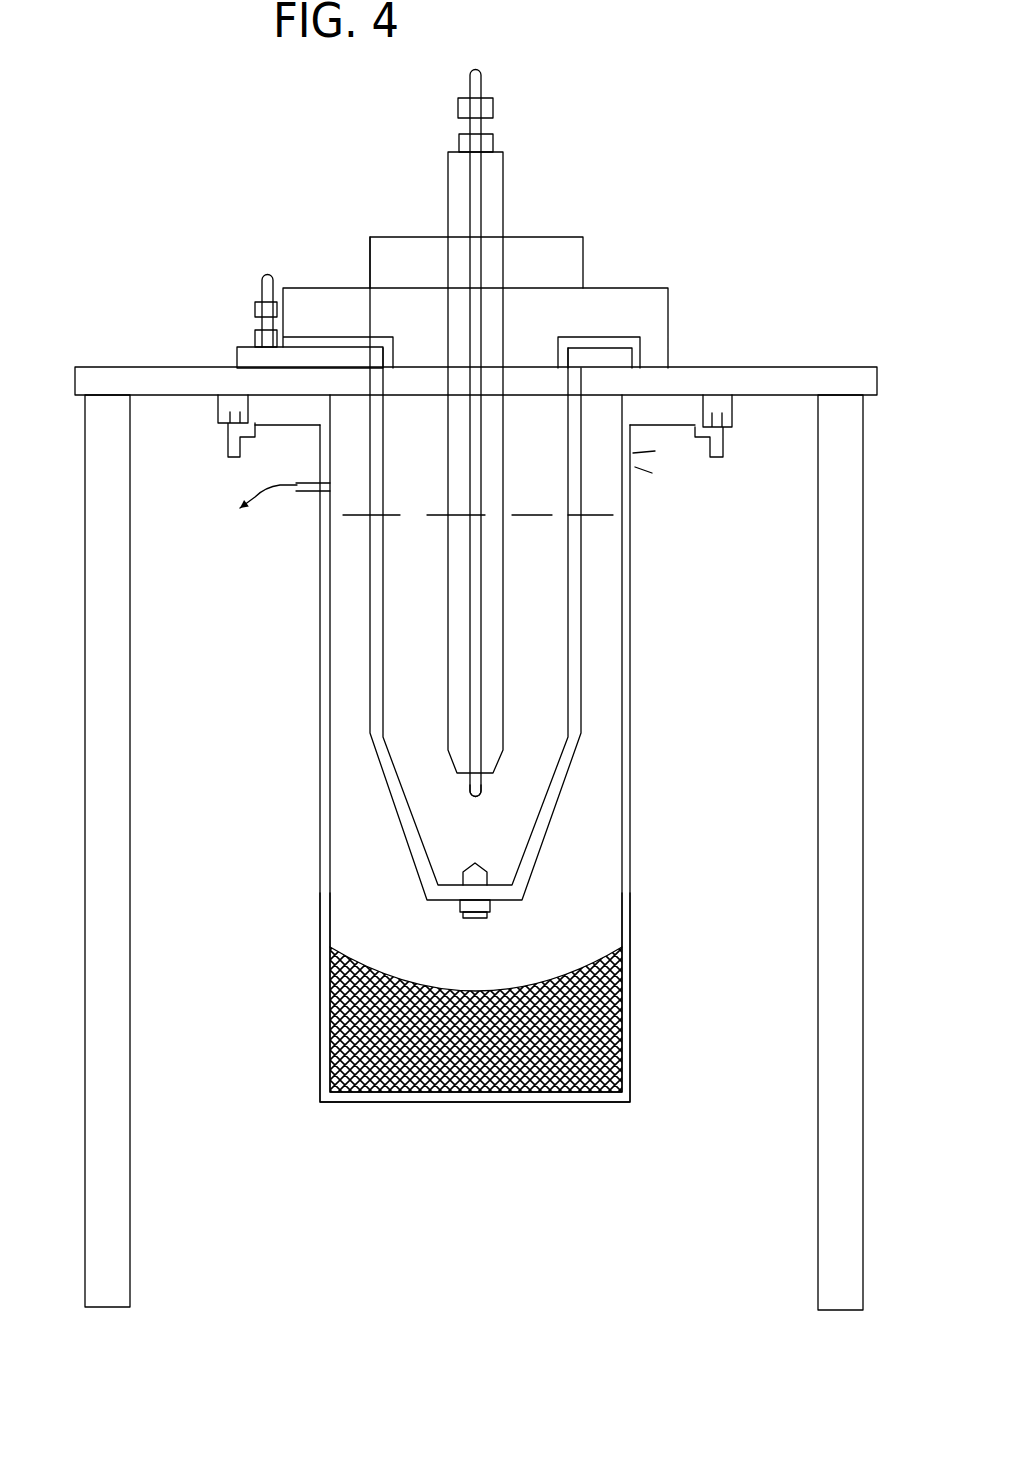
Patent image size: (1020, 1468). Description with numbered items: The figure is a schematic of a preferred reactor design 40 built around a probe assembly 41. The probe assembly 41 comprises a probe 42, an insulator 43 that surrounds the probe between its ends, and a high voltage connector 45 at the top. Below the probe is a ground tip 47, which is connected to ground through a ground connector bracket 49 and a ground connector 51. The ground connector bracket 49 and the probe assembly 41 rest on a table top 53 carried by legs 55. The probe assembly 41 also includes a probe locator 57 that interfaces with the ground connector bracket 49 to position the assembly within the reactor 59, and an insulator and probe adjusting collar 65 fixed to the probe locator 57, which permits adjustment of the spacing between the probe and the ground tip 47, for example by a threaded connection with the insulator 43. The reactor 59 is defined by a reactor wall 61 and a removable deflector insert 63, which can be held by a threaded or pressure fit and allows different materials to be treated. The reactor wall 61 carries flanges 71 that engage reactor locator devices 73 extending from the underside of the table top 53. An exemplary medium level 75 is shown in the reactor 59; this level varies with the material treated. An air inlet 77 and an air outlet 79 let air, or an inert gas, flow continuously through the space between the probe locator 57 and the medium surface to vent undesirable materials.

The reactor design 40 is at (718, 172).
The probe assembly 41 is at (536, 192).
The probe 42 is at (488, 796).
The insulator 43 is at (495, 668).
The high voltage connector 45 is at (487, 80).
The ground tip 47 is at (484, 882).
The ground connector bracket 49 is at (585, 705).
The ground connector 51 is at (263, 277).
The table top 53 is at (130, 373).
The legs 55 is at (113, 1093).
The probe locator 57 is at (656, 325).
The reactor 59 is at (590, 817).
The reactor wall 61 is at (318, 893).
The deflector insert 63 is at (445, 1052).
The insulator and probe adjusting collar 65 is at (568, 265).
The flanges 71 is at (280, 415).
The reactor locator devices 73 is at (228, 405).
The medium level 75 is at (352, 533).
The air inlet 77 is at (655, 490).
The air outlet 79 is at (298, 501).